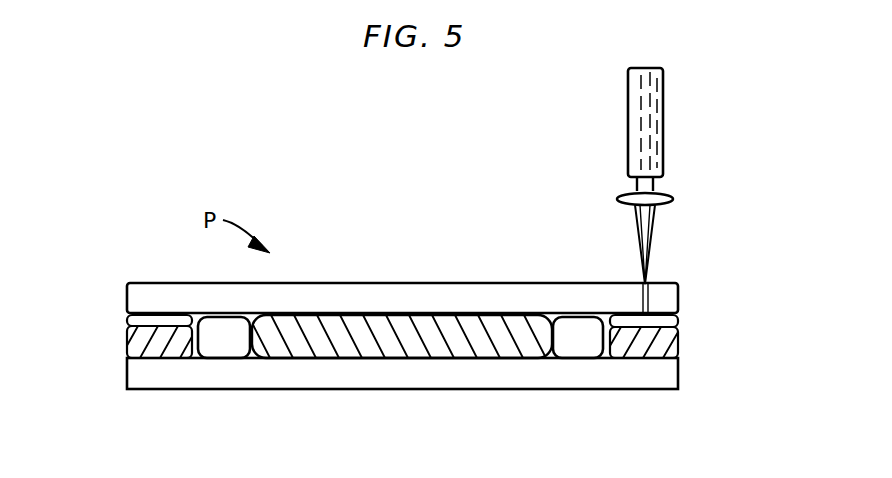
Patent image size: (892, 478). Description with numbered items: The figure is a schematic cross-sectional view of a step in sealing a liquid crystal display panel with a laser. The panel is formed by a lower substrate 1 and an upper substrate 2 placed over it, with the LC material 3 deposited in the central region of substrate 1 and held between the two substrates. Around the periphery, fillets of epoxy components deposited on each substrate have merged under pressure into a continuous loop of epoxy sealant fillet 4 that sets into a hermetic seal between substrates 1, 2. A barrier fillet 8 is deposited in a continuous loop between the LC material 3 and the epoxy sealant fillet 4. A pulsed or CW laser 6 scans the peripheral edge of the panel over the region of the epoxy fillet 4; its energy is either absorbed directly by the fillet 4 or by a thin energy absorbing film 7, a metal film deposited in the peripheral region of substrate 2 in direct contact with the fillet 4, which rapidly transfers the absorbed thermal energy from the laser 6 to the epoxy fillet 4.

The substrate 1 is at (668, 372).
The substrate 2 is at (655, 290).
The LC material 3 is at (462, 320).
The epoxy sealant fillet 4 is at (673, 328).
The laser 6 is at (647, 117).
The energy absorbing film 7 is at (129, 326).
The barrier fillet 8 is at (228, 343).